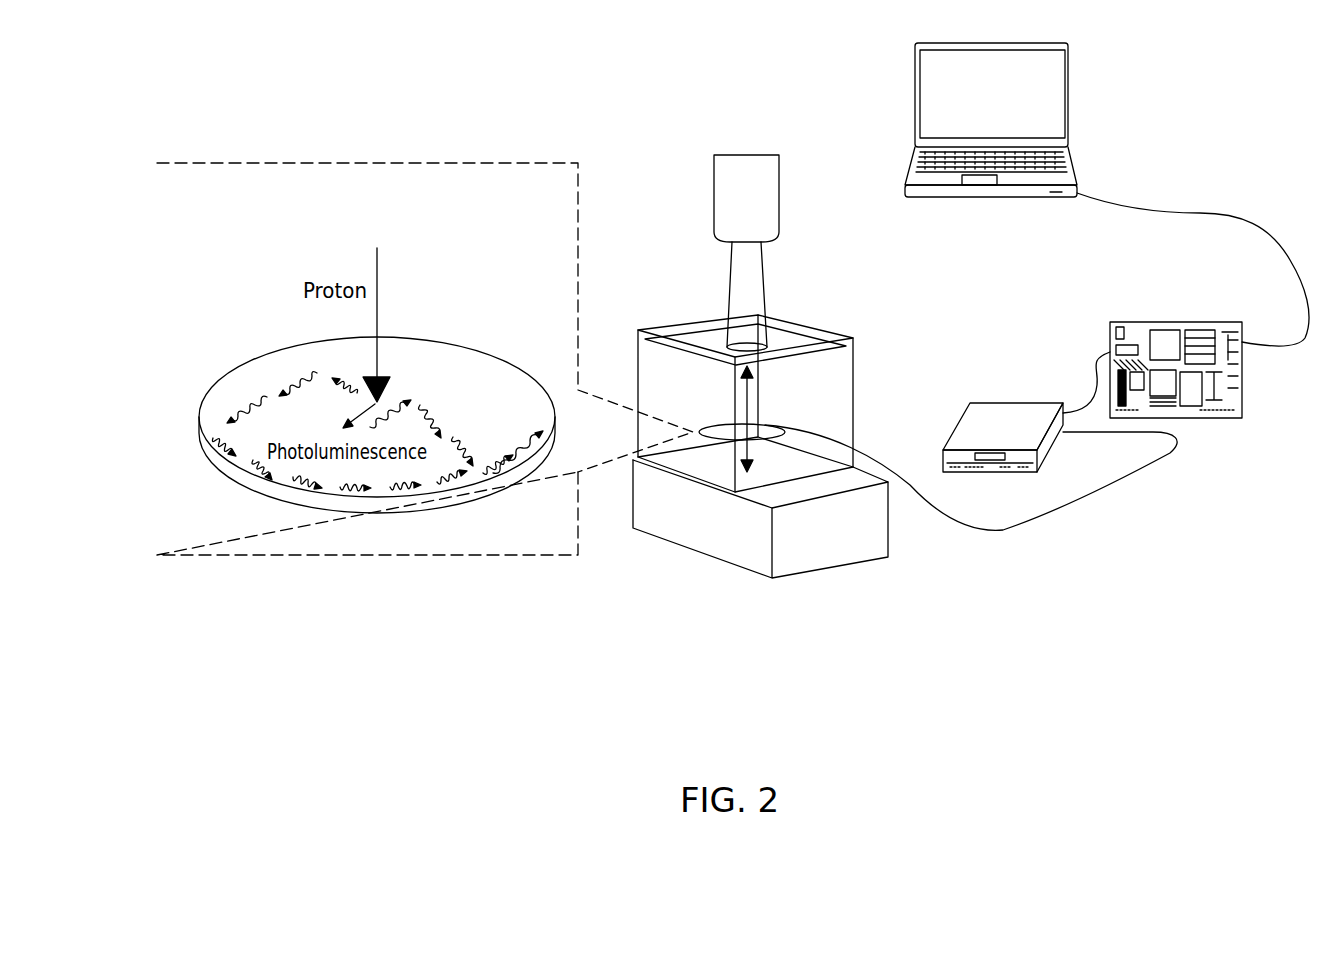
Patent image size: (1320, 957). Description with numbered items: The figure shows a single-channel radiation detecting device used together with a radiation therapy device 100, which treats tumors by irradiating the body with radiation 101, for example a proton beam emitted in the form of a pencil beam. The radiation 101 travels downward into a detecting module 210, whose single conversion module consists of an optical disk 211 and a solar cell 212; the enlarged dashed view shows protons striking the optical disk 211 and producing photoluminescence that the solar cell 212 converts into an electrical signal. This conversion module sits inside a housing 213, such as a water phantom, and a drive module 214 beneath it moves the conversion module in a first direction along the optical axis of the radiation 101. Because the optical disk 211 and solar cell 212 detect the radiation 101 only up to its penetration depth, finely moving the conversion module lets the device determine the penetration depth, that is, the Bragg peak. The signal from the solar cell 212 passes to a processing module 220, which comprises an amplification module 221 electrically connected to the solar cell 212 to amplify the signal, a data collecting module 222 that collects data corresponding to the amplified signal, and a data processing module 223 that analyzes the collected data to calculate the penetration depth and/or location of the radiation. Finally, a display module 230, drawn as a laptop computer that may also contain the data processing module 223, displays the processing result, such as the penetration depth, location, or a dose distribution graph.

The radiation therapy device 100 is at (779, 192).
The radiation 101 is at (767, 293).
The detecting module 210 is at (660, 630).
The optical disk 211 is at (333, 470).
The solar cell 212 is at (429, 497).
The housing 213 is at (687, 460).
The drive module 214 is at (695, 523).
The processing module 220 is at (985, 228).
The amplification module 221 is at (1057, 397).
The data collecting module 222 is at (1110, 323).
The data processing module 223 is at (1056, 197).
The display module 230 is at (1035, 87).